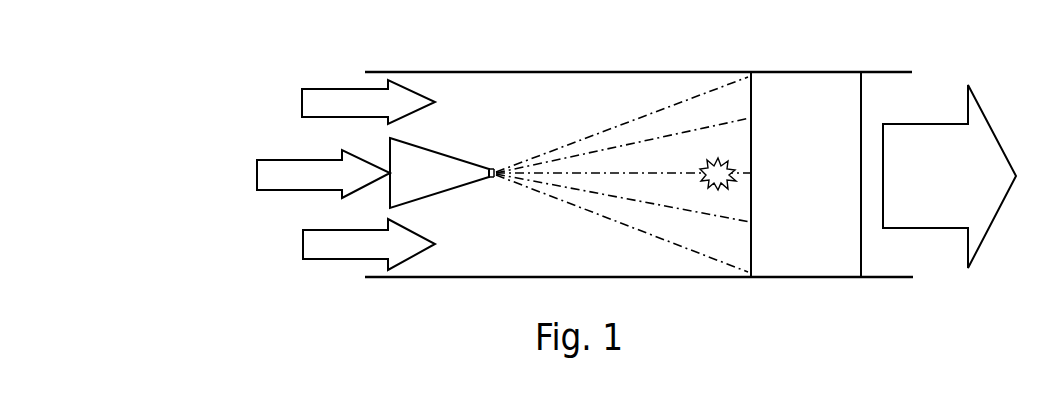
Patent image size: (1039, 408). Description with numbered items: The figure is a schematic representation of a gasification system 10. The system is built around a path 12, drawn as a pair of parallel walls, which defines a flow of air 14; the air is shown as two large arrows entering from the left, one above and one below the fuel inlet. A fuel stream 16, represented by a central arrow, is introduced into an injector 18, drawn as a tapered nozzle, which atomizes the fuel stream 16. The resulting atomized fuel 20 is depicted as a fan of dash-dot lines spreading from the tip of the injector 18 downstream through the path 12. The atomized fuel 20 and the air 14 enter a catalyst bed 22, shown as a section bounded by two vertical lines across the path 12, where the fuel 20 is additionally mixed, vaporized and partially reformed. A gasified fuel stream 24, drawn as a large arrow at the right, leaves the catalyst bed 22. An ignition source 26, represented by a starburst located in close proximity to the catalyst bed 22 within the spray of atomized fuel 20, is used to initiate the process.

The gasification system 10 is at (762, 36).
The path 12 is at (500, 76).
The flow of air 14 is at (318, 88).
The fuel stream 16 is at (258, 172).
The injector 18 is at (436, 160).
The atomized fuel 20 is at (560, 173).
The catalyst bed 22 is at (800, 248).
The gasified fuel stream 24 is at (940, 210).
The ignition source 26 is at (712, 162).